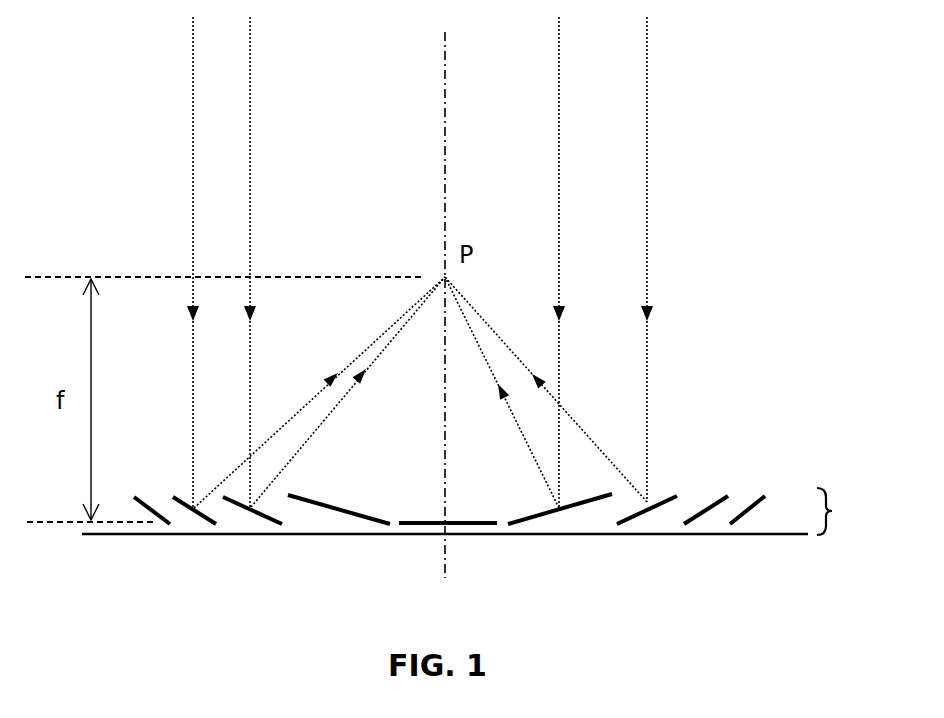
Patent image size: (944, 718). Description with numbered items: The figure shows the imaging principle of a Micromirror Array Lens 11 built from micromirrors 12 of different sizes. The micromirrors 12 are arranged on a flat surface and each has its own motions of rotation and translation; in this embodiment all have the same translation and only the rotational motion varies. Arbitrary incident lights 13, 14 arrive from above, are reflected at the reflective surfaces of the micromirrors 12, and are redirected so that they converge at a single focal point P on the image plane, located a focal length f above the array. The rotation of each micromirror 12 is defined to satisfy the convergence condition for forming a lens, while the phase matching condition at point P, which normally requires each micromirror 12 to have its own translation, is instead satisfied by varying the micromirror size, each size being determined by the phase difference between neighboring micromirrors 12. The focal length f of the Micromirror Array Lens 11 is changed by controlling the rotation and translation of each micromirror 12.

The Micromirror Array Lens 11 is at (496, 481).
The micromirror 12 is at (700, 503).
The arbitrary incident light 13 is at (657, 115).
The arbitrary incident light 14 is at (550, 115).